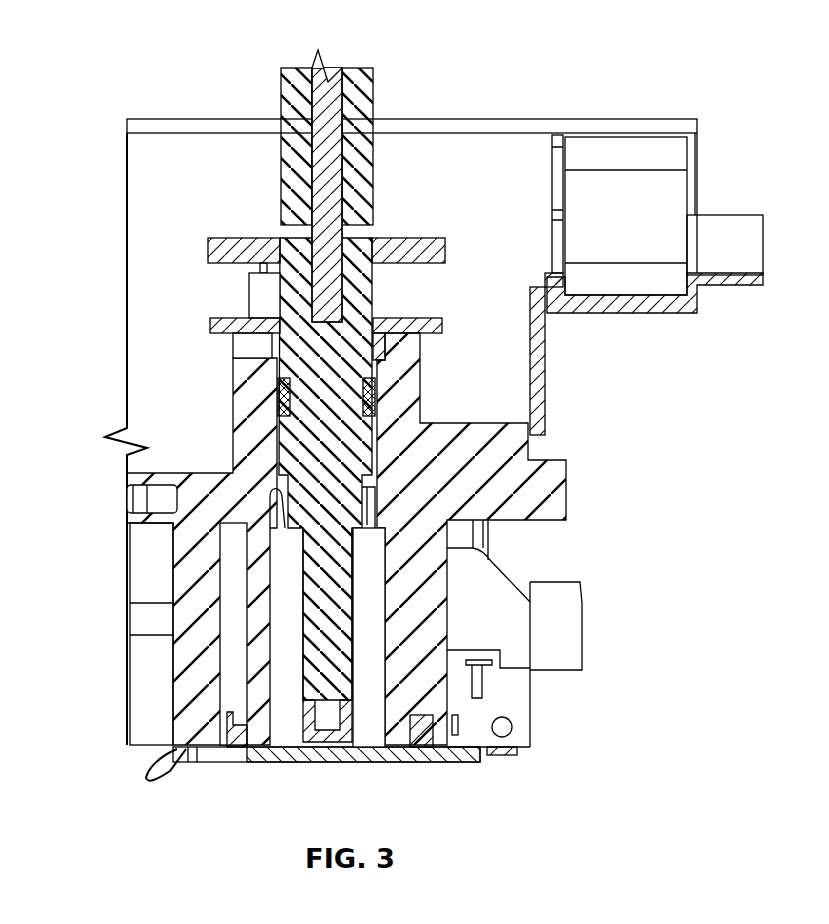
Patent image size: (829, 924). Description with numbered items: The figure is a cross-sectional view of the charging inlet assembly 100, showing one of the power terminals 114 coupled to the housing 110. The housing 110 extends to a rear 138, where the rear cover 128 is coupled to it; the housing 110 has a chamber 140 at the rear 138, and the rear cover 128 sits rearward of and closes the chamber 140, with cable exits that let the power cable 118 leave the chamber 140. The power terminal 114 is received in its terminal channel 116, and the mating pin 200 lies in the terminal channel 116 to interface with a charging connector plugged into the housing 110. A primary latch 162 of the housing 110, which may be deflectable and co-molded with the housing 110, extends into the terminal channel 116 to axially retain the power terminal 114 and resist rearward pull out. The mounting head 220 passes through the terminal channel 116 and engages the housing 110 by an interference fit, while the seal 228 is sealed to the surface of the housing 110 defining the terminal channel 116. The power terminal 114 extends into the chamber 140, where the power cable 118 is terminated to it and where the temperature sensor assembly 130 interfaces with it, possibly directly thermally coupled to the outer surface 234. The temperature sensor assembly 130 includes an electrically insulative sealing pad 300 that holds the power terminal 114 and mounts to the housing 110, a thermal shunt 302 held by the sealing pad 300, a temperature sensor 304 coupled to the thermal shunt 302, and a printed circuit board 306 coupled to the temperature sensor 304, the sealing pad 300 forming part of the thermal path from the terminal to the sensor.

The charging inlet assembly 100 is at (644, 36).
The housing 110 is at (520, 703).
The power terminal 114 is at (310, 683).
The terminal channel 116 is at (367, 715).
The power cable 118 is at (286, 80).
The rear cover 128 is at (678, 127).
The temperature sensor assembly 130 is at (239, 218).
The rear 138 is at (247, 317).
The chamber 140 is at (489, 305).
The primary latch 162 is at (277, 483).
The mating pin 200 is at (337, 557).
The mounting head 220 is at (355, 468).
The seal 228 is at (376, 400).
The outer surface 234 is at (380, 303).
The sealing pad 300 is at (228, 332).
The thermal shunt 302 is at (250, 290).
The temperature sensor 304 is at (267, 268).
The printed circuit board 306 is at (210, 253).